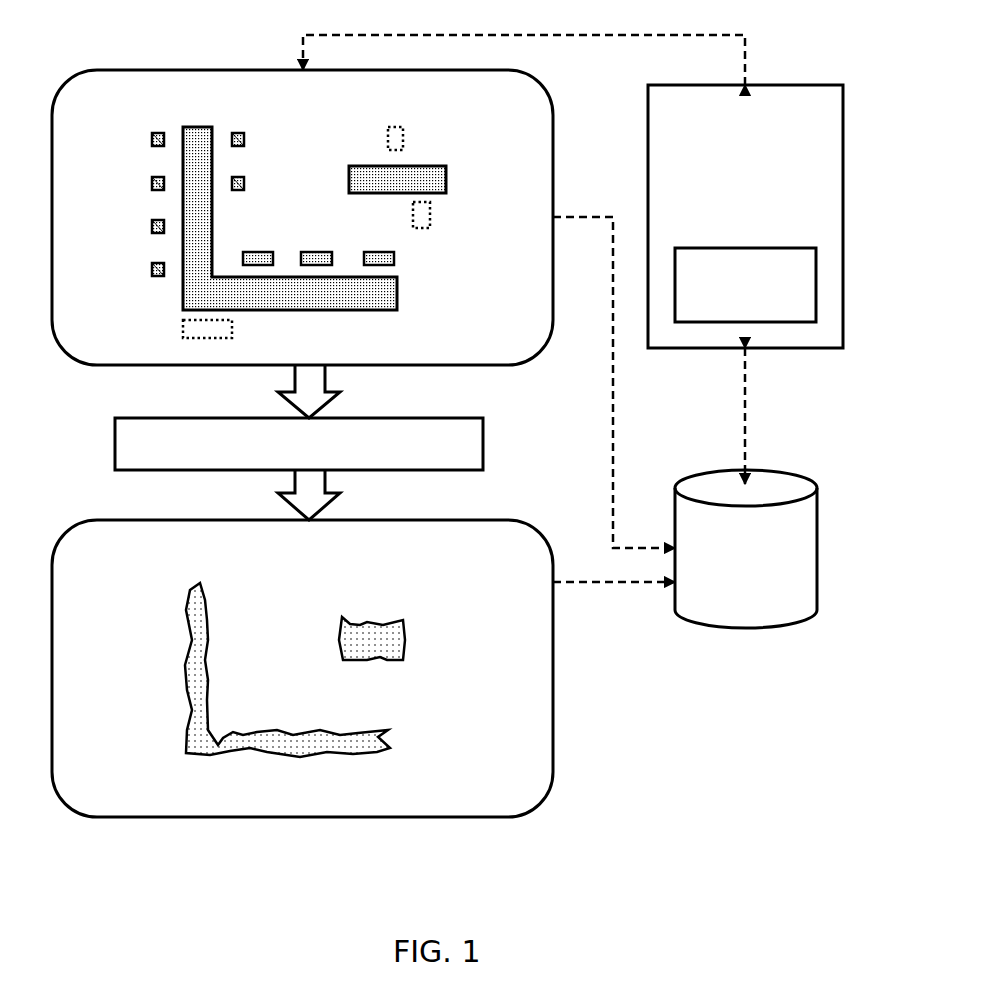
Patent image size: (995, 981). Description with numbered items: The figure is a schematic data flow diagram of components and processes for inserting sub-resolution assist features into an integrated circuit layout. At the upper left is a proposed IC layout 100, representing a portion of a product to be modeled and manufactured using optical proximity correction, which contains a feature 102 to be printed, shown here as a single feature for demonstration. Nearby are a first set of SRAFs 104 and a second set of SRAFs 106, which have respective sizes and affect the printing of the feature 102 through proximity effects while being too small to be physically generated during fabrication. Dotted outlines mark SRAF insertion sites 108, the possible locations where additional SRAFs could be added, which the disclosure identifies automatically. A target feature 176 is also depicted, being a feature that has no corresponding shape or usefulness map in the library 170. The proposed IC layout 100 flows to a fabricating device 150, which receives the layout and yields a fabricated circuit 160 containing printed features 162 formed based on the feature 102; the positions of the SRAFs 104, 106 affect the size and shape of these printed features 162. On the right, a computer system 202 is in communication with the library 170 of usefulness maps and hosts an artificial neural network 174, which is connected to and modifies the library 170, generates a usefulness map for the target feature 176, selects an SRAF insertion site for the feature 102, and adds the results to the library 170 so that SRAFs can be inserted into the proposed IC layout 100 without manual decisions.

The proposed IC layout 100 is at (195, 70).
The feature 102 is at (380, 290).
The first set of SRAFs 104 is at (152, 142).
The second set of SRAFs 106 is at (270, 253).
The SRAF insertion site 108 is at (393, 137).
The target feature 176 is at (425, 177).
The fabricating device 150 is at (299, 444).
The fabricated circuit 160 is at (453, 817).
The printed feature 162 is at (408, 640).
The computer system 202 is at (745, 216).
The artificial neural network (ANN) 174 is at (745, 285).
The library 170 is at (746, 549).